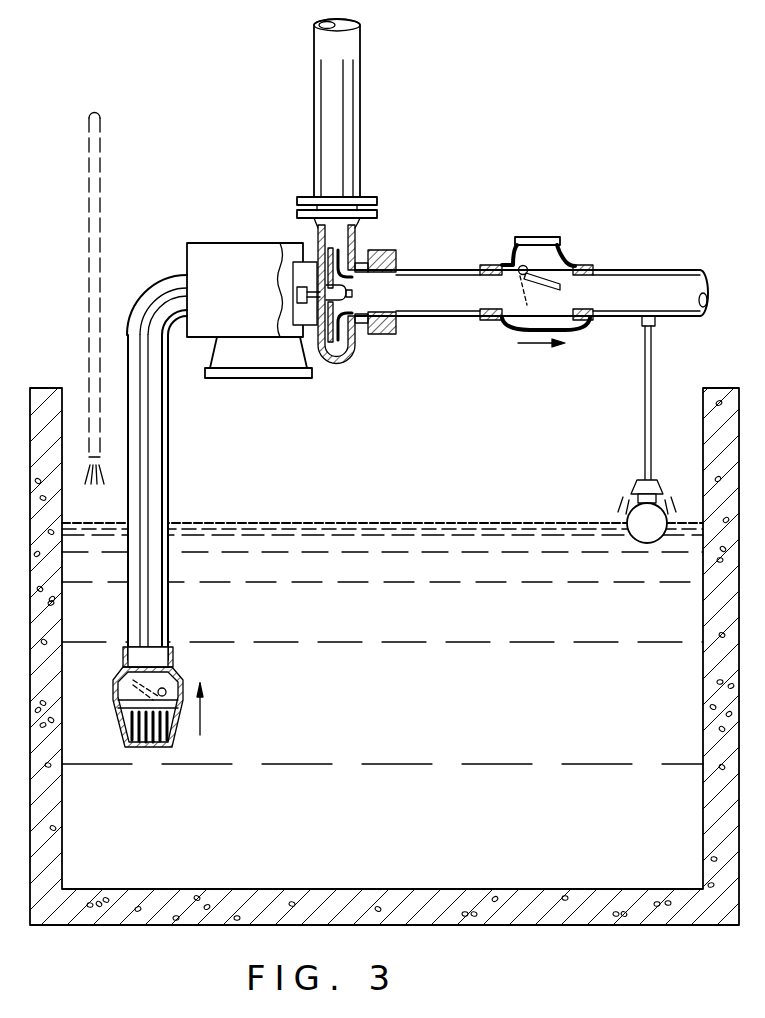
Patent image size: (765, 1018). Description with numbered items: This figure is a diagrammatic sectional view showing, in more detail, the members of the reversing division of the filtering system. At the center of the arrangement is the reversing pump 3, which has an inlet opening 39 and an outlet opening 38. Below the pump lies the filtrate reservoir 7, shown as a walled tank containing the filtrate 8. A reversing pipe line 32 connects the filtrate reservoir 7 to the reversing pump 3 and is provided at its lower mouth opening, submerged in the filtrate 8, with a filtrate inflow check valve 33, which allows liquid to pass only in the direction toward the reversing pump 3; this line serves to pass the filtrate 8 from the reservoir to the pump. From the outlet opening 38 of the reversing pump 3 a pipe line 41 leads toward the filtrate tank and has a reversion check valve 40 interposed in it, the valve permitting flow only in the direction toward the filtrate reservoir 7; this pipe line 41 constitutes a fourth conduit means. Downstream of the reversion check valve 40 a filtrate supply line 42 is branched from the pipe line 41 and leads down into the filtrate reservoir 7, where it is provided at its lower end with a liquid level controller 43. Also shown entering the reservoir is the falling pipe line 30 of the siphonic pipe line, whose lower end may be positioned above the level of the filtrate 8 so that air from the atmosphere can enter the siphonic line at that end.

The reversing pump 3 is at (299, 243).
The filtrate reservoir 7 is at (608, 906).
The filtrate 8 is at (332, 535).
The falling pipe line 30 is at (100, 229).
The reversing pipe line 32 is at (166, 452).
The filtrate inflow check valve 33 is at (166, 689).
The outlet opening 38 is at (356, 221).
The inlet opening 39 is at (186, 274).
The reversion check valve 40 is at (500, 268).
The pipe line 41 is at (633, 278).
The filtrate supply line 42 is at (652, 356).
The liquid level controller 43 is at (637, 515).